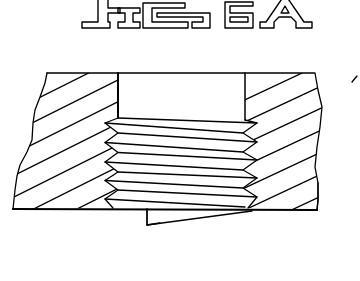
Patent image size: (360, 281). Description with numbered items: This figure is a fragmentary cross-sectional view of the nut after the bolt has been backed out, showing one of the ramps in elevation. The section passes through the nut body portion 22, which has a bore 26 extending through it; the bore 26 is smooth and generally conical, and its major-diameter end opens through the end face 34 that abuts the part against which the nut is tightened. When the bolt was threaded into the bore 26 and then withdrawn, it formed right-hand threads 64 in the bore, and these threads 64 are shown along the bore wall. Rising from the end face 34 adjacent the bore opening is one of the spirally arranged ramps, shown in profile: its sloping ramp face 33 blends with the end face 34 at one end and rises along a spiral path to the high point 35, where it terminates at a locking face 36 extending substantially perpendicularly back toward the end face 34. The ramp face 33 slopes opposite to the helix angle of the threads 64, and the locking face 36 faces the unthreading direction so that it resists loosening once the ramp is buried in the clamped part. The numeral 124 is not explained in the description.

The body portion 22 is at (307, 90).
The bore 26 is at (120, 88).
The threads 64 is at (184, 126).
The workpiece portion 124 is at (338, 190).
The end face 34 is at (76, 210).
The locking face 36 is at (147, 223).
The high point 35 is at (147, 225).
The ramp face 33 is at (210, 218).